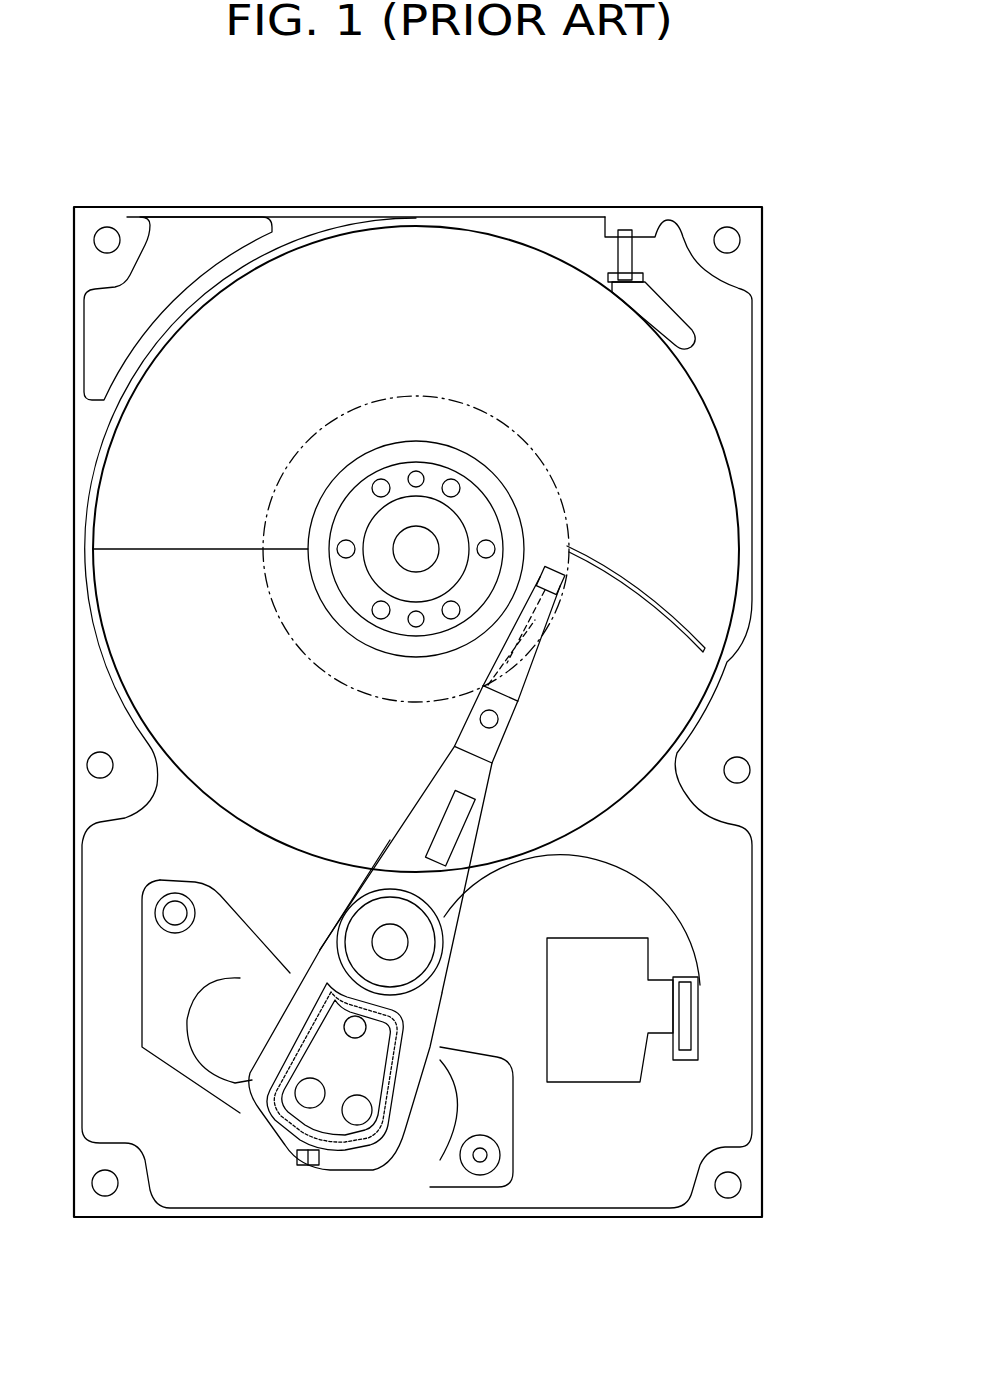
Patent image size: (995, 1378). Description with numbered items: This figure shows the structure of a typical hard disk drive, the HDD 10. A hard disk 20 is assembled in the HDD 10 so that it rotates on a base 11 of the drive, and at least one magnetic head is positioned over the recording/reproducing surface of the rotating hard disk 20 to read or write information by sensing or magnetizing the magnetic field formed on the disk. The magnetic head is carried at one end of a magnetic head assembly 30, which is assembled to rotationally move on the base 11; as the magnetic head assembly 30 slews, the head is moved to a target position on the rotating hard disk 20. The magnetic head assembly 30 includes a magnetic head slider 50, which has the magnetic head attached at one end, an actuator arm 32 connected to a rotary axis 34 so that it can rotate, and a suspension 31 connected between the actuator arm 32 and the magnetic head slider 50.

The HDD 10 is at (772, 173).
The base 11 is at (740, 910).
The hard disk 20 is at (717, 413).
The magnetic head assembly 30 is at (395, 793).
The suspension 31 is at (519, 687).
The actuator arm 32 is at (480, 808).
The rotary axis 34 is at (386, 930).
The magnetic head slider 50 is at (563, 580).